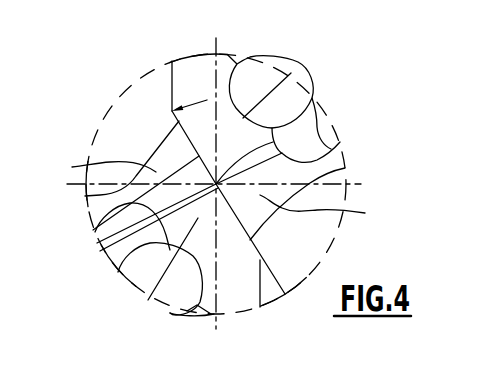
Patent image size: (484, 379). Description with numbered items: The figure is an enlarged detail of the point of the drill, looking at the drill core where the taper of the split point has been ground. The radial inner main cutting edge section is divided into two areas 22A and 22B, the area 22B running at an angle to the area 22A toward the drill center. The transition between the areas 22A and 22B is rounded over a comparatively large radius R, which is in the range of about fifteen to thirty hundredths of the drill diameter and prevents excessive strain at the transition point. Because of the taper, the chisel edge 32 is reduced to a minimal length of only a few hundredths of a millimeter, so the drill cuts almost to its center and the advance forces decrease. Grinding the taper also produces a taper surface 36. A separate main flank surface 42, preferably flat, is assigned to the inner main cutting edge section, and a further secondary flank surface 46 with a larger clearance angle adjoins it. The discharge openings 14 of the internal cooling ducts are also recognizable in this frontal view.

The area of the radial inner main cutting edge section 22A is at (172, 92).
The radius R is at (195, 103).
The discharge openings 14 is at (290, 74).
The chisel edge 32 is at (283, 143).
The taper surface 36 is at (218, 180).
The area of the radial inner main cutting edge section 22B is at (98, 243).
The secondary flank surface 46 is at (151, 299).
The main flank surface 42 is at (240, 272).